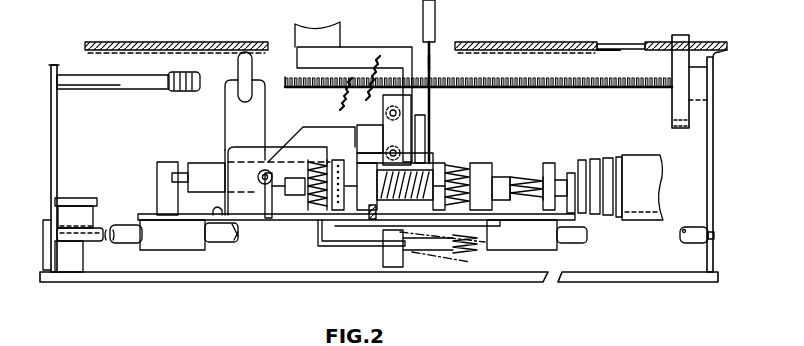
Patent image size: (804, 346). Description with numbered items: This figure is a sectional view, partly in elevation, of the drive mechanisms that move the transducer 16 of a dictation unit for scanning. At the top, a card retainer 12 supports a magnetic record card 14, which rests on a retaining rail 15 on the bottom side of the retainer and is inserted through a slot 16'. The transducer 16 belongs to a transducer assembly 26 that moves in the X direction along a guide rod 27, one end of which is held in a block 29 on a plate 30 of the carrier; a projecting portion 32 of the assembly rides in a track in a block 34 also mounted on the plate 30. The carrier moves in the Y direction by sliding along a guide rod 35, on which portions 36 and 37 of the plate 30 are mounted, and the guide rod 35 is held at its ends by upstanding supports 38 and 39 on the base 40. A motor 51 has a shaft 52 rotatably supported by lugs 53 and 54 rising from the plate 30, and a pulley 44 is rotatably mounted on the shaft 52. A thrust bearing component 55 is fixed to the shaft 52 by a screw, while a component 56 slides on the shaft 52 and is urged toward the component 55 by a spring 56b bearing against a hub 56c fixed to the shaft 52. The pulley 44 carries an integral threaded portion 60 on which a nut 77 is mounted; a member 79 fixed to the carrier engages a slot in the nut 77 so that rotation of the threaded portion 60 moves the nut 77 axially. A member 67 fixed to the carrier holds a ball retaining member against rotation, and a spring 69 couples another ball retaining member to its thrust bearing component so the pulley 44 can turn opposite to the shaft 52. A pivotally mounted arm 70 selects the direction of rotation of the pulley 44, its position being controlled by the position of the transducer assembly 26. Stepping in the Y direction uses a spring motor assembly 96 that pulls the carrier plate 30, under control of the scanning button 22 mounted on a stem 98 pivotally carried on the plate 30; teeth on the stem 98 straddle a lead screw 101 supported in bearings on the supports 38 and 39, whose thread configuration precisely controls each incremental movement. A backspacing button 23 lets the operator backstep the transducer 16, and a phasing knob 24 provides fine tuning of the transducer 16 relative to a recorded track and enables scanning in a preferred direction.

The card retainer 12 is at (190, 42).
The magnetic record card 14 is at (612, 51).
The retaining rail 15 is at (100, 59).
The transducer 16 is at (252, 101).
The slot 16' is at (621, 30).
The scanning button 22 is at (436, 22).
The backspacing button 23 is at (319, 27).
The phasing knob 24 is at (688, 37).
The transducer assembly 26 is at (225, 126).
The guide rod 27 is at (257, 178).
The block 29 is at (276, 160).
The plate 30 is at (254, 220).
The projecting portion 32 is at (181, 172).
The block 34 is at (157, 183).
The guide rod 35 is at (125, 245).
The portion 36 is at (176, 251).
The portion 37 is at (556, 250).
The upstanding support 38 is at (50, 164).
The upstanding support 39 is at (713, 153).
The base 40 is at (514, 283).
The pulley 44 is at (338, 160).
The motor 51 is at (648, 193).
The shaft 52 is at (272, 220).
The lug 53 is at (571, 173).
The lug 54 is at (268, 213).
The thrust bearing component 55 is at (305, 221).
The thrust bearing component 56 is at (502, 176).
The spring 56b is at (522, 176).
The hub 56c is at (549, 163).
The threaded portion 60 is at (388, 232).
The member 67 is at (479, 163).
The spring 69 is at (448, 164).
The arm 70 is at (337, 248).
The nut 77 is at (368, 213).
The member 79 is at (425, 158).
The spring motor assembly 96 is at (93, 189).
The stem 98 is at (434, 60).
The lead screw 101 is at (652, 92).